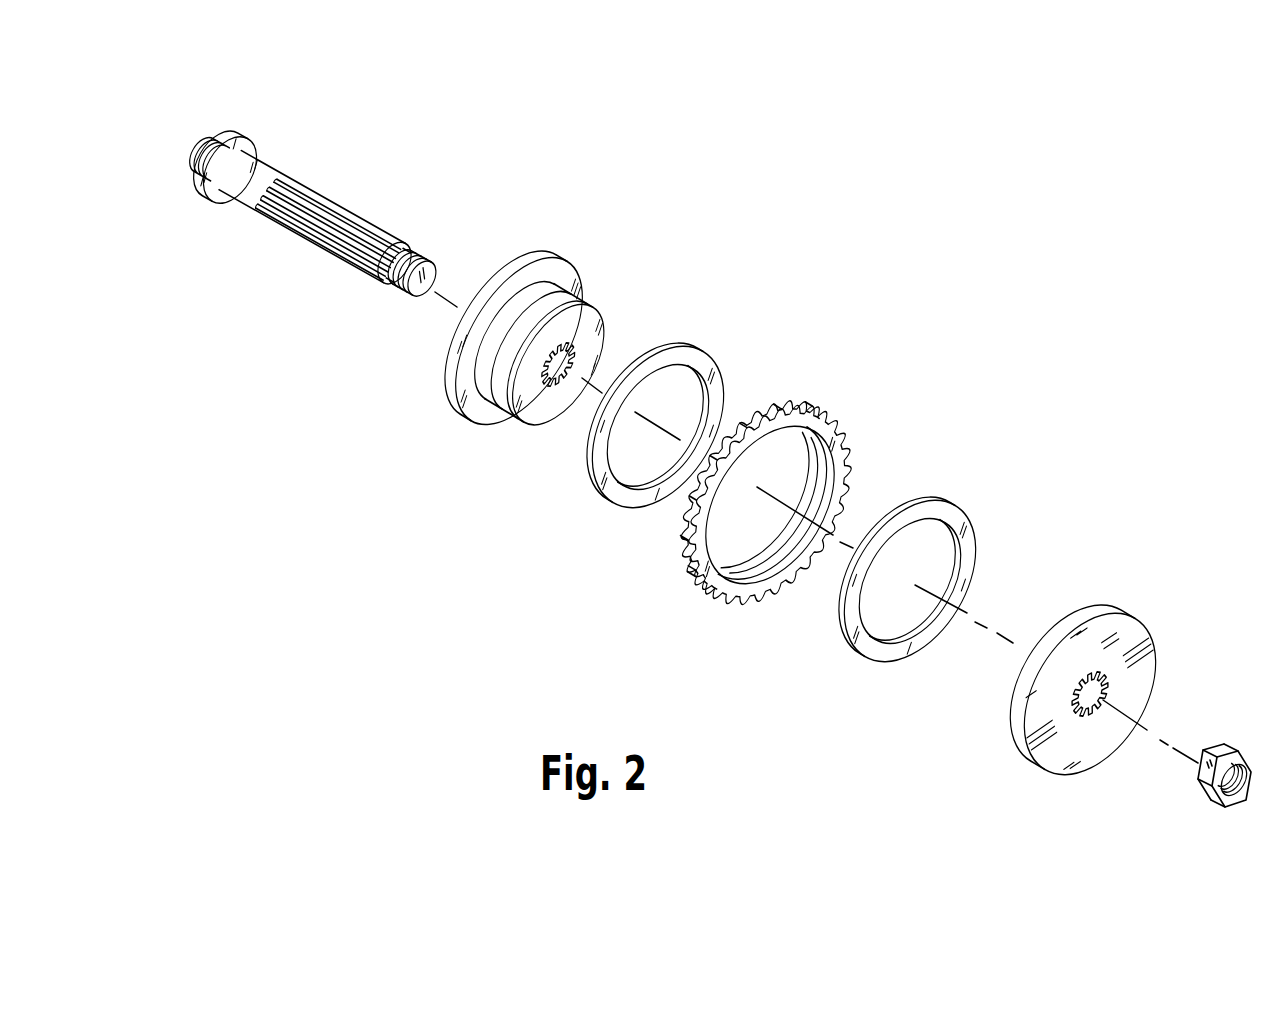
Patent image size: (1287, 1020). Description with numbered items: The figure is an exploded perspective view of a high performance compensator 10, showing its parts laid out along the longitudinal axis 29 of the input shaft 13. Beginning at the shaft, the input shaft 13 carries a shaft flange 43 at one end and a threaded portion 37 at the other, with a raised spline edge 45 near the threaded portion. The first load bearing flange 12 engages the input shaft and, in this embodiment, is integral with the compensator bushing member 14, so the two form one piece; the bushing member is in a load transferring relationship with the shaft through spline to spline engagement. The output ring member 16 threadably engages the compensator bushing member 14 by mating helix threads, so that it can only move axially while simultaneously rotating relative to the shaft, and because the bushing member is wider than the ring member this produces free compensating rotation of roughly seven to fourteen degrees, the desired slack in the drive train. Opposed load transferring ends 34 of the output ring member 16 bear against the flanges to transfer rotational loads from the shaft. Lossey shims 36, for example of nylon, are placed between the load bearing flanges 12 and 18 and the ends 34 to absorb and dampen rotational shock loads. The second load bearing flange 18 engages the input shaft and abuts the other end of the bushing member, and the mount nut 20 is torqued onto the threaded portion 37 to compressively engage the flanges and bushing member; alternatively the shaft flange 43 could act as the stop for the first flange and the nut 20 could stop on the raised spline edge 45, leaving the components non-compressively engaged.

The compensator 10 is at (1066, 325).
The first load bearing flange 12 is at (540, 253).
The input shaft 13 is at (280, 173).
The compensator bushing member 14 is at (478, 403).
The output ring member 16 is at (840, 395).
The second load bearing flange 18 is at (1153, 625).
The mount nut 20 is at (1200, 787).
The longitudinal axis 29 is at (997, 640).
The load transferring ends 34 is at (722, 590).
The lossey shims 36 is at (703, 350).
The threaded portion 37 is at (427, 250).
The shaft flange 43 is at (262, 152).
The raised spline edge 45 is at (368, 282).